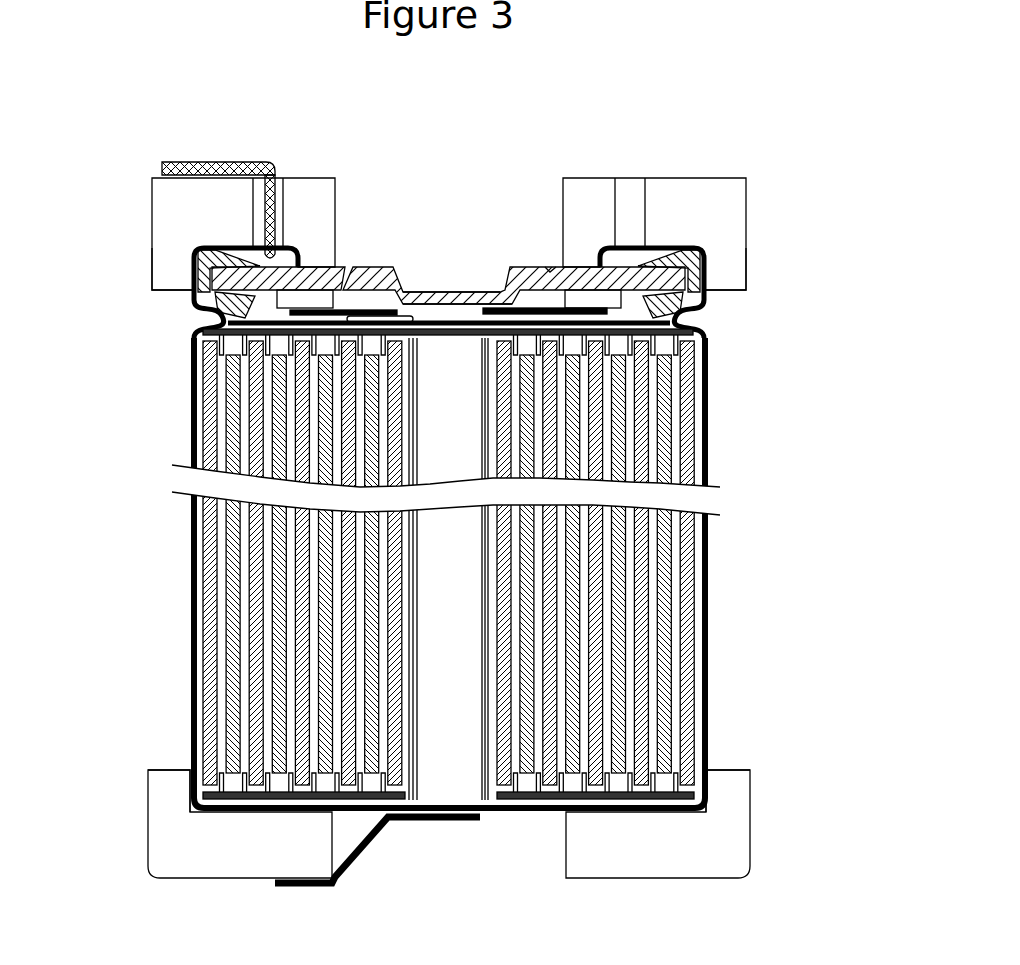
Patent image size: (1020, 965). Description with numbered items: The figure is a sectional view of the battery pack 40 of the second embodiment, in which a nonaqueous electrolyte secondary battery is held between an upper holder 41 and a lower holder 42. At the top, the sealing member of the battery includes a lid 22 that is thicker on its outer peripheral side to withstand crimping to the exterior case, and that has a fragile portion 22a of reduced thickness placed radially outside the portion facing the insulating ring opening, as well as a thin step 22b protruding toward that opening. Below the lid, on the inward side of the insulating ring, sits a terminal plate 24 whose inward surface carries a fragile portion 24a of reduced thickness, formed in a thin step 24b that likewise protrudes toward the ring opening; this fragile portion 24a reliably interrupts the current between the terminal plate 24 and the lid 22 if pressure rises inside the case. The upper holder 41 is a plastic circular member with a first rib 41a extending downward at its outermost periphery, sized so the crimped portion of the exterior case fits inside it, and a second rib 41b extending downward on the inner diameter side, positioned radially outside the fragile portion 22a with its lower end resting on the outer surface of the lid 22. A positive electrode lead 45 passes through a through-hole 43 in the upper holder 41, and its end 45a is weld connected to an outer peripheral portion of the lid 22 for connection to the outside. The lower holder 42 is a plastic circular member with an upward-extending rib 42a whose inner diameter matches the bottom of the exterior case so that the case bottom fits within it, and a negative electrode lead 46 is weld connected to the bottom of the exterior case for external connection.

The battery pack 40 is at (155, 86).
The lid 22 is at (395, 266).
The fragile portion 22a is at (547, 260).
The thin step 22b is at (478, 300).
The terminal plate 24 is at (323, 330).
The fragile portion 24a is at (405, 330).
The thin step 24b is at (482, 335).
The upper holder 41 is at (165, 225).
The first rib 41a is at (168, 280).
The second rib 41b is at (322, 262).
The lower holder 42 is at (173, 860).
The rib 42a is at (163, 775).
The through-hole 43 is at (250, 208).
The positive electrode lead 45 is at (205, 160).
The end of positive electrode lead 45a is at (297, 256).
The negative electrode lead 46 is at (360, 857).